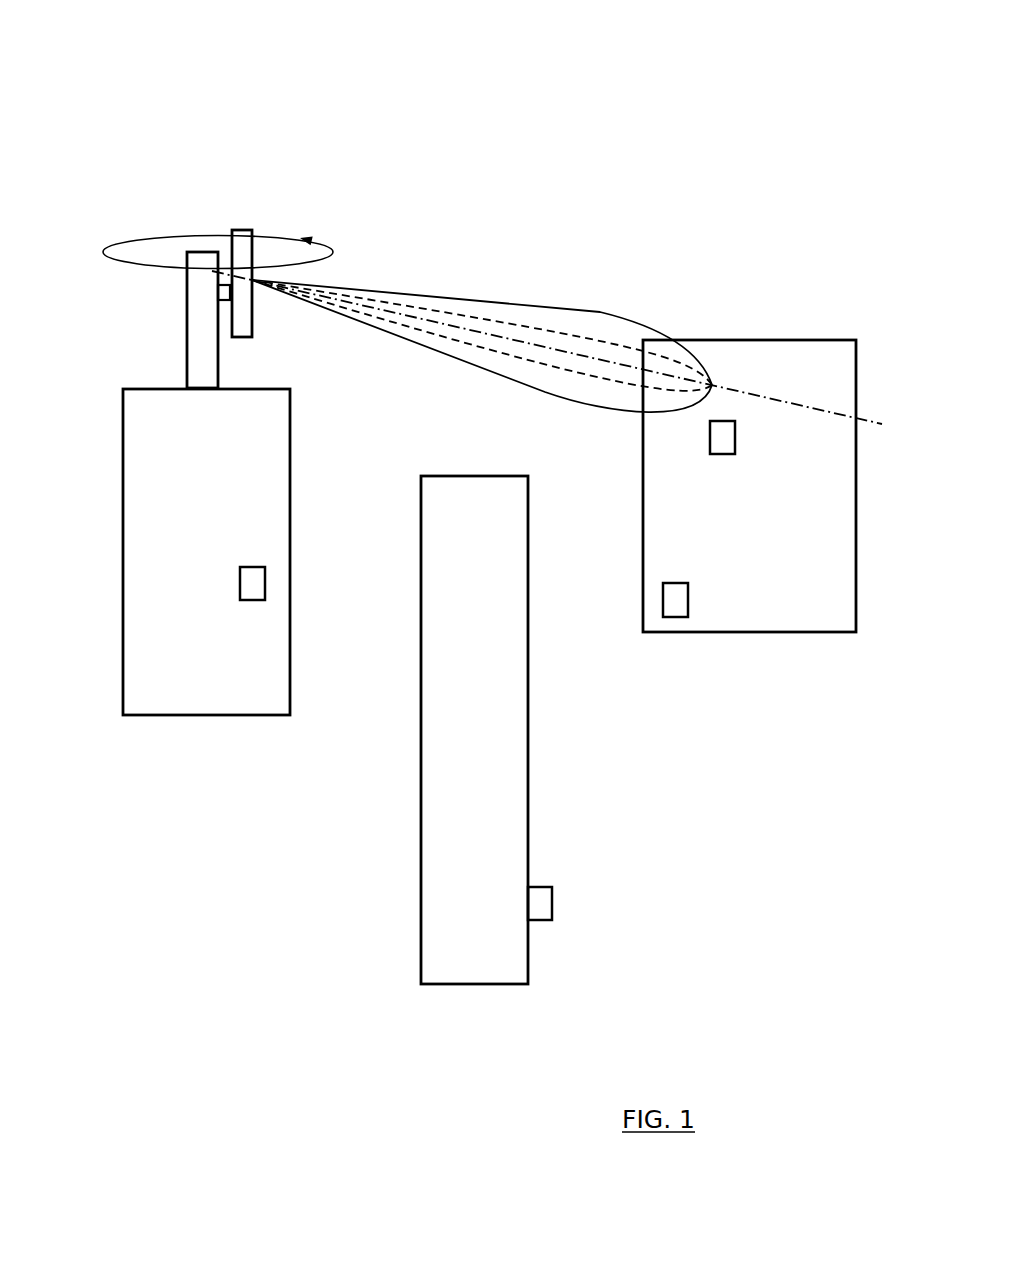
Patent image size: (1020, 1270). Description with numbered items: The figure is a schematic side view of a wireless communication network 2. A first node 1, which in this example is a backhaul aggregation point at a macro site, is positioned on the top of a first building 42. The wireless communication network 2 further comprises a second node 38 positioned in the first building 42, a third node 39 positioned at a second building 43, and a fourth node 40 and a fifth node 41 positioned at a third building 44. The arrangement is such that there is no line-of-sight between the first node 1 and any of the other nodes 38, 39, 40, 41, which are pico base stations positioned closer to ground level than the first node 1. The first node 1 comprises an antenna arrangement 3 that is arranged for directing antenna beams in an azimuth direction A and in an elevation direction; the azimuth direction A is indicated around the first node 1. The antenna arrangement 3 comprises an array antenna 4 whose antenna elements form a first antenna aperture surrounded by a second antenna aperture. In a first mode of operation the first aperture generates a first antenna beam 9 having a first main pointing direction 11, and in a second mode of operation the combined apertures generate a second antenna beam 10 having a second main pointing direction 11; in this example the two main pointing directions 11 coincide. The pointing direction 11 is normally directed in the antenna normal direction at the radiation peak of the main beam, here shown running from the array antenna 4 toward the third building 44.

The first node 1 is at (170, 163).
The wireless communication network 2 is at (427, 80).
The antenna arrangement 3 is at (282, 207).
The array antenna 4 is at (240, 258).
The first antenna beam 9 is at (632, 323).
The second antenna beam 10 is at (553, 328).
The main pointing direction 11 is at (790, 403).
The second node 38 is at (250, 580).
The third node 39 is at (543, 904).
The fourth node 40 is at (678, 602).
The fifth node 41 is at (730, 437).
The first building 42 is at (181, 673).
The second building 43 is at (464, 797).
The third building 44 is at (727, 516).
The azimuth direction A is at (160, 237).